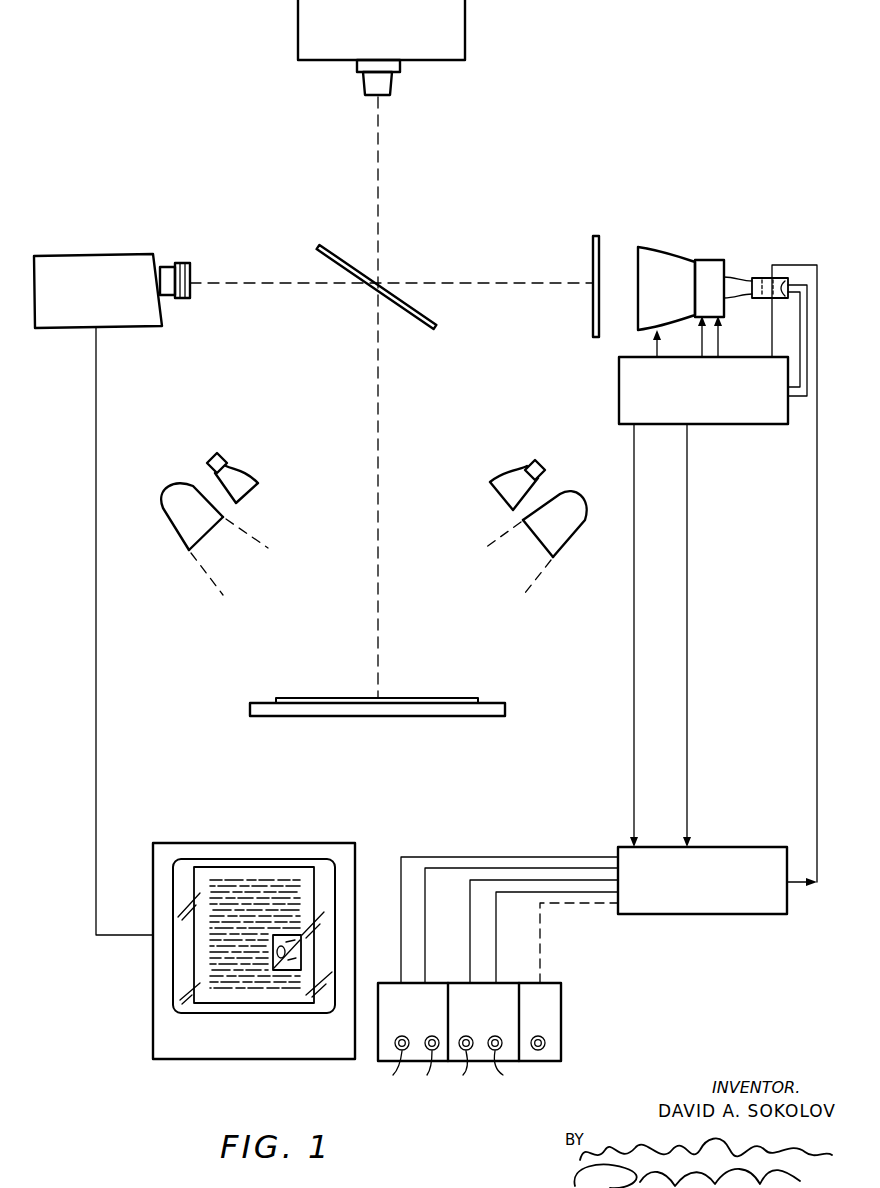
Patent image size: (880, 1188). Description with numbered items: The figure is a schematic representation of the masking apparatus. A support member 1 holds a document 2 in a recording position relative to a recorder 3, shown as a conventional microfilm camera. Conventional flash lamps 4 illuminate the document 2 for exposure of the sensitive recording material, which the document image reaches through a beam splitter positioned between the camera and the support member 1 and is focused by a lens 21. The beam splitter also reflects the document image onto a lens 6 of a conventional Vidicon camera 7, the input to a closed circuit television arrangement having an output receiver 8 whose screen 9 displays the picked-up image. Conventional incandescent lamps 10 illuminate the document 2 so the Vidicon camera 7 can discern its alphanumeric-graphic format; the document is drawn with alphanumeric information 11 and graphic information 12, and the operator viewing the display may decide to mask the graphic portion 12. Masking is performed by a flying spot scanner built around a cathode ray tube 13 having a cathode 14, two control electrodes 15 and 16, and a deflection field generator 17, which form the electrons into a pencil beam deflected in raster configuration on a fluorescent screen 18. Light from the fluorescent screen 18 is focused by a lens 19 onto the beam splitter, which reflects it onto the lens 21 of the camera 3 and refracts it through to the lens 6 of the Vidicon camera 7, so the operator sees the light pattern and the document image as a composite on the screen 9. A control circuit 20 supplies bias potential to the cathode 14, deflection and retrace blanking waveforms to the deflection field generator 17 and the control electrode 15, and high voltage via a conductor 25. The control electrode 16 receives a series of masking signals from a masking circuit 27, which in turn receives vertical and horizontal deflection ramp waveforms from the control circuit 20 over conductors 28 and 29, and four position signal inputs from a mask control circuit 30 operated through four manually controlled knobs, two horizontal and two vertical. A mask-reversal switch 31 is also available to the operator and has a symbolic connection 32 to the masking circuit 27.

The support member 1 is at (505, 712).
The document 2 is at (459, 698).
The recorder 3 is at (465, 22).
The flash lamps 4 is at (250, 475).
The lens 6 is at (186, 262).
The Vidicon camera 7 is at (130, 254).
The output receiver 8 is at (153, 862).
The screen 9 is at (173, 982).
The incandescent lamps 10 is at (180, 530).
The alphanumeric information 11 is at (291, 879).
The graphic information 12 is at (301, 952).
The cathode ray tube 13 is at (719, 303).
The cathode 14 is at (777, 298).
The control electrode 15 is at (777, 285).
The control electrode 16 is at (760, 278).
The deflection field generator 17 is at (724, 312).
The fluorescent screen 18 is at (641, 253).
The lens 19 is at (593, 258).
The control circuit 20 is at (619, 386).
The lens 21 is at (392, 84).
The conductor 25 is at (657, 345).
The masking circuit 27 is at (732, 847).
The conductor 28 is at (634, 764).
The conductor 29 is at (687, 764).
The mask control circuit 30 is at (549, 983).
The mask-reversal switch 31 is at (545, 1043).
The symbolic connection 32 is at (540, 936).